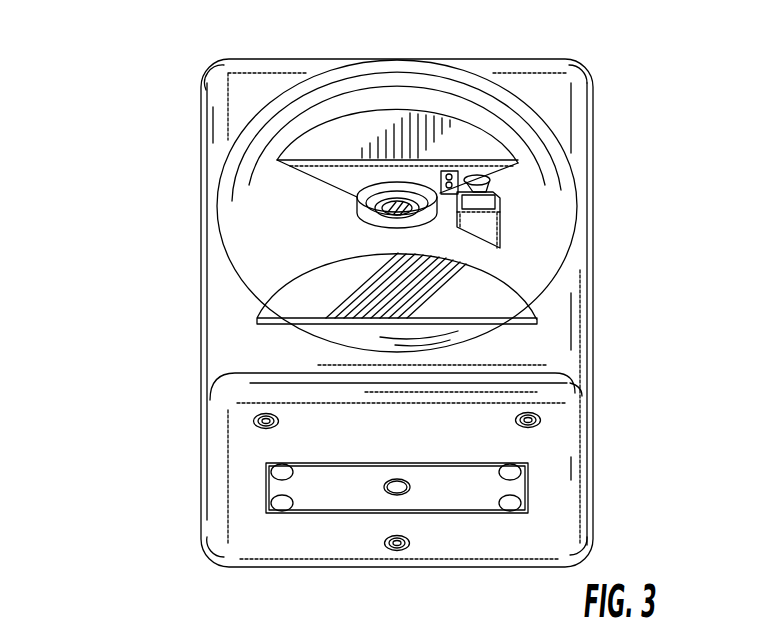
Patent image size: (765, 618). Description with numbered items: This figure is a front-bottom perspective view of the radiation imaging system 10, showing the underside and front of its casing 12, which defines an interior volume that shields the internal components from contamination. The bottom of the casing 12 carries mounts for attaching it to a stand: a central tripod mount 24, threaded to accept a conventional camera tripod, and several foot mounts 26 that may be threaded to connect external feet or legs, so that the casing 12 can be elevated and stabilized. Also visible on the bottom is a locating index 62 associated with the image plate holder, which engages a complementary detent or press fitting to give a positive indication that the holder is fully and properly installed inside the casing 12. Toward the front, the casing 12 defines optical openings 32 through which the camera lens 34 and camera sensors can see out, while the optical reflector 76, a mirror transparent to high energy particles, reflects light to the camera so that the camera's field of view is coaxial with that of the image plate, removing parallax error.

The radiation imaging system 10 is at (118, 115).
The casing 12 is at (200, 337).
The tripod mount 24 is at (411, 490).
The foot mounts 26 is at (253, 420).
The optical openings 32 is at (500, 222).
The camera lens 34 is at (367, 221).
The locating index 62 is at (266, 493).
The optical reflector 76 is at (496, 288).